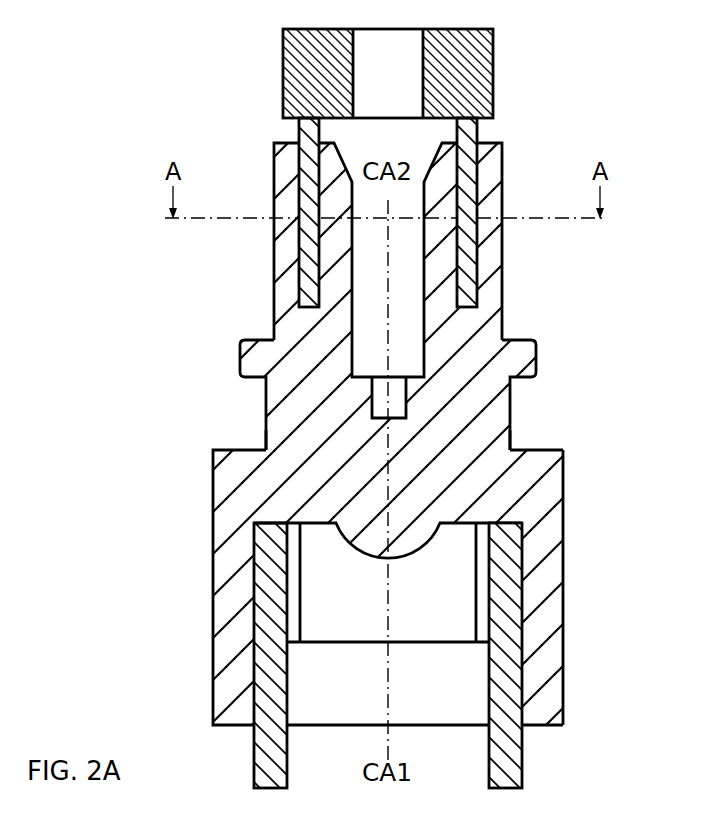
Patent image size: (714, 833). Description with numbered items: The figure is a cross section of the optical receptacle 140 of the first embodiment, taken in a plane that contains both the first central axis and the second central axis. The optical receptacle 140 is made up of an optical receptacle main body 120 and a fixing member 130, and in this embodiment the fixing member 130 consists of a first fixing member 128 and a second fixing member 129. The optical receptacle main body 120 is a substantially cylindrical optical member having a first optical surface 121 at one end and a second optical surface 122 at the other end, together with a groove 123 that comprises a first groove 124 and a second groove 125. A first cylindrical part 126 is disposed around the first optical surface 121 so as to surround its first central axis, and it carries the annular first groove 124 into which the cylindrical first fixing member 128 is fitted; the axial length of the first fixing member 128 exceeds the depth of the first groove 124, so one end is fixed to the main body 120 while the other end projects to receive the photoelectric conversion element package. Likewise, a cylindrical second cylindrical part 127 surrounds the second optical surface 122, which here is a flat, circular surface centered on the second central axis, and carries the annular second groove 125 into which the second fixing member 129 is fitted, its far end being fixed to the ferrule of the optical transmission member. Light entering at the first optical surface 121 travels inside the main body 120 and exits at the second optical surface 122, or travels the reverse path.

The optical receptacle main body 120 is at (563, 700).
The first optical surface 121 is at (338, 524).
The second optical surface 122 is at (298, 291).
The groove 123 is at (123, 365).
The first groove 124 is at (284, 532).
The second groove 125 is at (388, 374).
The first cylindrical part 126 is at (542, 627).
The second cylindrical part 127 is at (490, 259).
The first fixing member 128 is at (508, 540).
The second fixing member 129 is at (478, 290).
The fixing member 130 is at (577, 453).
The optical receptacle 140 is at (637, 105).